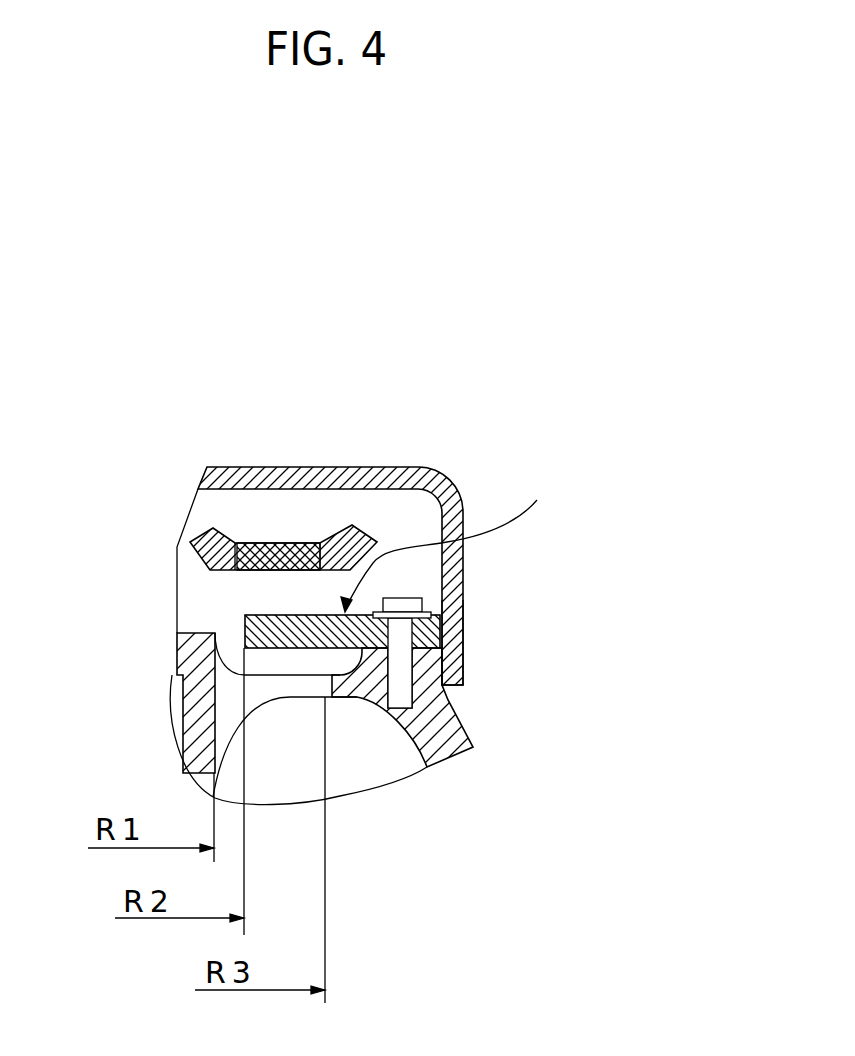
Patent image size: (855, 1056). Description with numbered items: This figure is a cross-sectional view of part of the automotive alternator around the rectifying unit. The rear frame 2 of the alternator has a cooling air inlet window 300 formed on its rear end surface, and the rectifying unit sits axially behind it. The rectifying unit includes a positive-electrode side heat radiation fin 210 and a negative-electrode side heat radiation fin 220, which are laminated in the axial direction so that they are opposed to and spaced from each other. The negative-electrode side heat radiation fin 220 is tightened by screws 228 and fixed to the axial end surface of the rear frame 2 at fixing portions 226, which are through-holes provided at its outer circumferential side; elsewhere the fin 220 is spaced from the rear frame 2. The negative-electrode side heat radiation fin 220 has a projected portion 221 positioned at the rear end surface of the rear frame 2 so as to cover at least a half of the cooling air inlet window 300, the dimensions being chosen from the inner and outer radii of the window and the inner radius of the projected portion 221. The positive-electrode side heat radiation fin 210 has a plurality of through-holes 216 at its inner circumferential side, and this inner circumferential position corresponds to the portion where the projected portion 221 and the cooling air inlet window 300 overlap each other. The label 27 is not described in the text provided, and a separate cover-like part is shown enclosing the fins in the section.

The rear frame 2 is at (470, 740).
The cover 27 is at (418, 470).
The positive-electrode side heat radiation fin 210 is at (210, 540).
The through-holes 216 is at (248, 560).
The negative-electrode side heat radiation fin 220 is at (459, 539).
The projected portion 221 is at (245, 630).
The fixing portions 226 is at (463, 637).
The screws 228 is at (400, 597).
The cooling air inlet window 300 is at (270, 683).